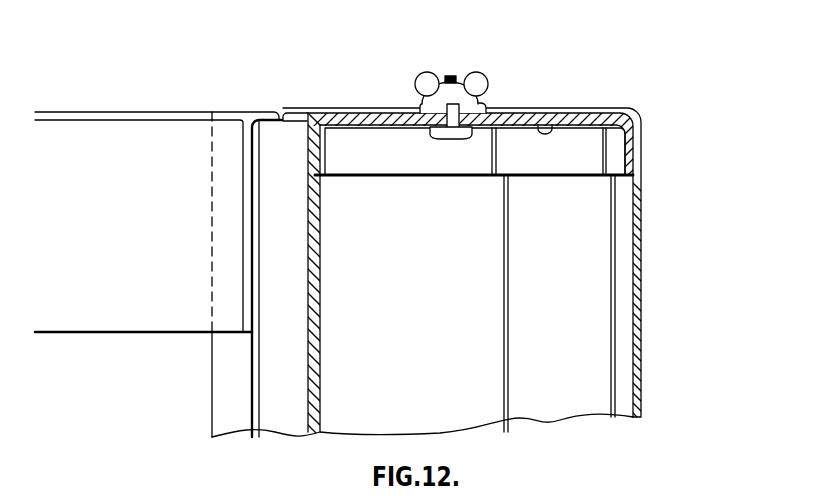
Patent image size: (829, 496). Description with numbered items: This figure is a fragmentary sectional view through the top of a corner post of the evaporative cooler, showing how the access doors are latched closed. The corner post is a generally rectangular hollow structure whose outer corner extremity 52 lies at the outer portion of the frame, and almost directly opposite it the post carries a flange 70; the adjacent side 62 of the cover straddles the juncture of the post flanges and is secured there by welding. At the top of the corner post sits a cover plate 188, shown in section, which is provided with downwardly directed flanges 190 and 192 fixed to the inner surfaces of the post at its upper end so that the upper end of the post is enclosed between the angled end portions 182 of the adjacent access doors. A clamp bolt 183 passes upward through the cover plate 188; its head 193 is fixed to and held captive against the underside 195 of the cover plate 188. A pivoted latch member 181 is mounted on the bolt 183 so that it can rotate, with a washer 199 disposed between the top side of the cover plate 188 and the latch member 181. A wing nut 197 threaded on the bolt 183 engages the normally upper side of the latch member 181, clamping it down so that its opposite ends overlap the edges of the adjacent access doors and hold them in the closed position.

The corner extremity 52 is at (638, 351).
The side of the cover 62 is at (118, 208).
The flange 70 is at (213, 398).
The pivoted latch member 181 is at (425, 108).
The end portion of access door 182 is at (512, 115).
The clamp bolt 183 is at (452, 75).
The cover plate 188 is at (406, 125).
The downwardly directed flange 190 is at (322, 157).
The downwardly directed flange 192 is at (625, 155).
The head 193 is at (462, 140).
The underside 195 is at (547, 127).
The wing nut 197 is at (427, 78).
The washer 199 is at (470, 78).